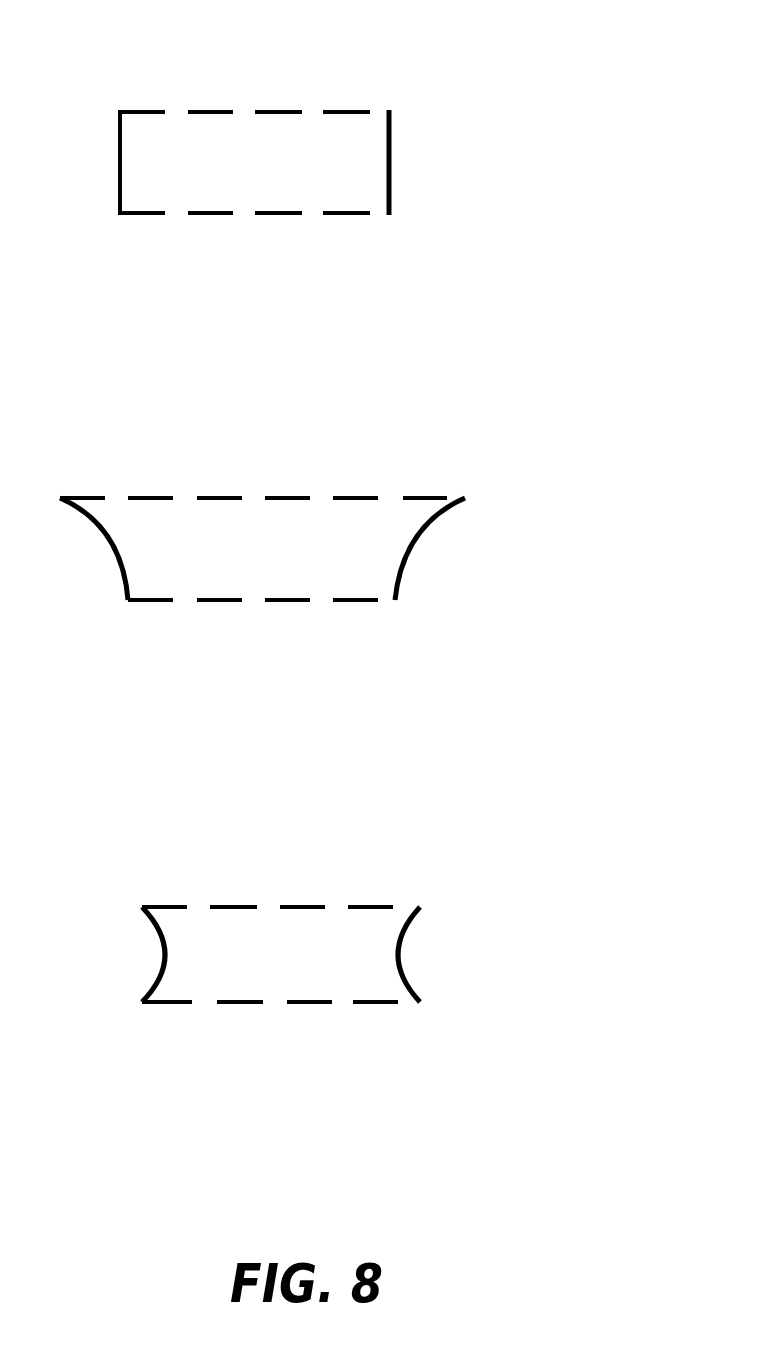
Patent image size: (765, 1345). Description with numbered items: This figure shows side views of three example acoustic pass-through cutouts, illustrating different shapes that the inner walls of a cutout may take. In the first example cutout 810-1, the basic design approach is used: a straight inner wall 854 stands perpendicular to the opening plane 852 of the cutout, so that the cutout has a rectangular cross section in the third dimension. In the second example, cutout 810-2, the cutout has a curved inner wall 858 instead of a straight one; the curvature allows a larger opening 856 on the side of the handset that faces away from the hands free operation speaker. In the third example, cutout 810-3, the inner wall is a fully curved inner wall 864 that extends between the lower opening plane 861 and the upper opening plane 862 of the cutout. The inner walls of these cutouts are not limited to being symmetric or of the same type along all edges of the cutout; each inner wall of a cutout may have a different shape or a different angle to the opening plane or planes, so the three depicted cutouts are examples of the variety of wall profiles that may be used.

The example cutout 810-1 is at (407, 43).
The opening plane 852 is at (203, 93).
The straight inner wall 854 is at (407, 160).
The cutout 810-2 is at (450, 455).
The opening on the side of the handset away from the hands free operation speaker 856 is at (253, 480).
The curved inner wall 858 is at (455, 547).
The cutout 810-3 is at (435, 868).
The lower opening plane 861 is at (238, 1052).
The upper opening plane 862 is at (233, 885).
The fully curved inner wall 864 is at (435, 952).